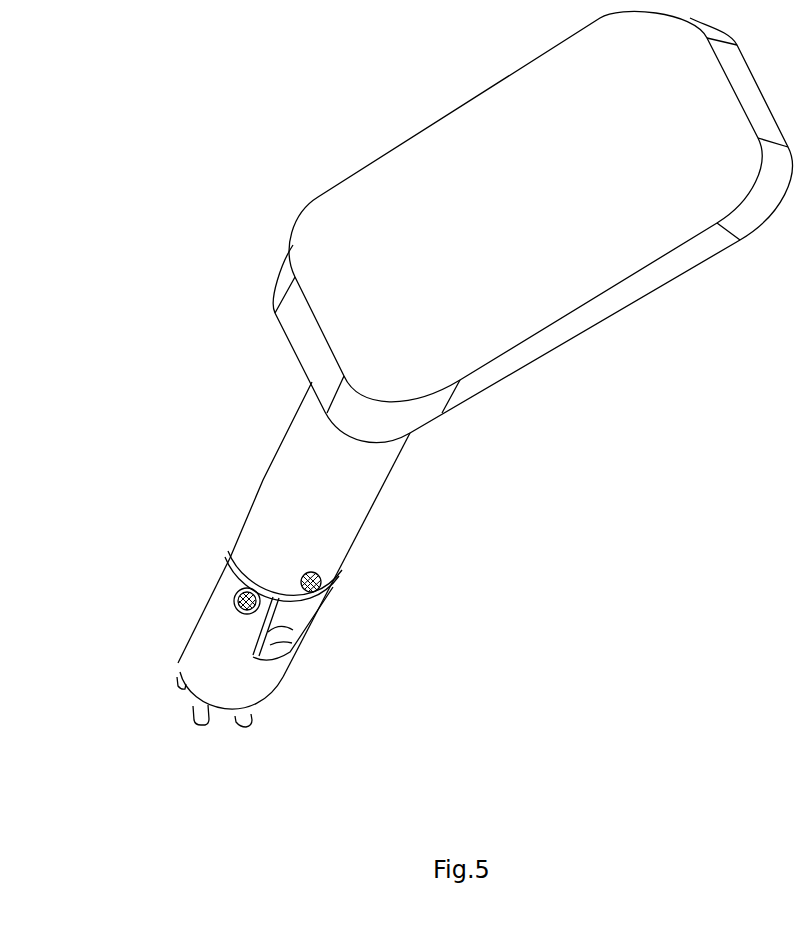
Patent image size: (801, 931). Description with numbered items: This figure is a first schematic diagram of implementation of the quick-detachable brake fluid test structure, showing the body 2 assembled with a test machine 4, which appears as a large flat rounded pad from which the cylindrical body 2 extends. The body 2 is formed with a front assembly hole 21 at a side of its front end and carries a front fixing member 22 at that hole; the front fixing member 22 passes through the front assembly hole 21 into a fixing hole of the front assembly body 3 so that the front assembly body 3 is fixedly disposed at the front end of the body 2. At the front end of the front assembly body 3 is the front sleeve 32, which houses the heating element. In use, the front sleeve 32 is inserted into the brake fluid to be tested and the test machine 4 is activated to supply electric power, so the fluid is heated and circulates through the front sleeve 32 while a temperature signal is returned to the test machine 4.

The test machine 4 is at (588, 258).
The body 2 is at (327, 505).
The front assembly body 3 is at (227, 557).
The front sleeve 32 is at (257, 687).
The front fixing member 22 is at (318, 580).
The front assembly hole 21 is at (317, 597).